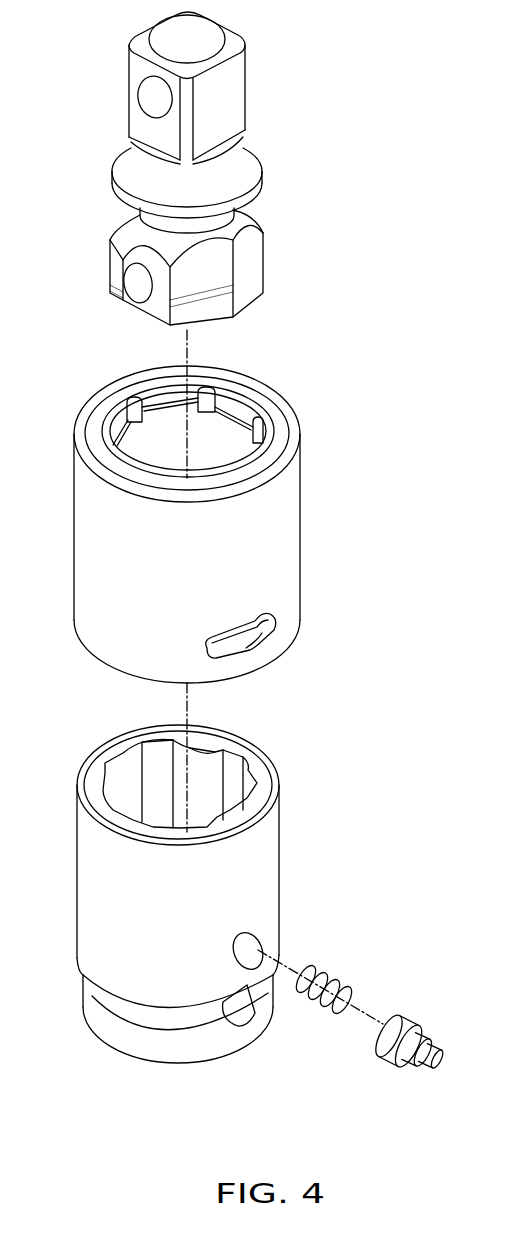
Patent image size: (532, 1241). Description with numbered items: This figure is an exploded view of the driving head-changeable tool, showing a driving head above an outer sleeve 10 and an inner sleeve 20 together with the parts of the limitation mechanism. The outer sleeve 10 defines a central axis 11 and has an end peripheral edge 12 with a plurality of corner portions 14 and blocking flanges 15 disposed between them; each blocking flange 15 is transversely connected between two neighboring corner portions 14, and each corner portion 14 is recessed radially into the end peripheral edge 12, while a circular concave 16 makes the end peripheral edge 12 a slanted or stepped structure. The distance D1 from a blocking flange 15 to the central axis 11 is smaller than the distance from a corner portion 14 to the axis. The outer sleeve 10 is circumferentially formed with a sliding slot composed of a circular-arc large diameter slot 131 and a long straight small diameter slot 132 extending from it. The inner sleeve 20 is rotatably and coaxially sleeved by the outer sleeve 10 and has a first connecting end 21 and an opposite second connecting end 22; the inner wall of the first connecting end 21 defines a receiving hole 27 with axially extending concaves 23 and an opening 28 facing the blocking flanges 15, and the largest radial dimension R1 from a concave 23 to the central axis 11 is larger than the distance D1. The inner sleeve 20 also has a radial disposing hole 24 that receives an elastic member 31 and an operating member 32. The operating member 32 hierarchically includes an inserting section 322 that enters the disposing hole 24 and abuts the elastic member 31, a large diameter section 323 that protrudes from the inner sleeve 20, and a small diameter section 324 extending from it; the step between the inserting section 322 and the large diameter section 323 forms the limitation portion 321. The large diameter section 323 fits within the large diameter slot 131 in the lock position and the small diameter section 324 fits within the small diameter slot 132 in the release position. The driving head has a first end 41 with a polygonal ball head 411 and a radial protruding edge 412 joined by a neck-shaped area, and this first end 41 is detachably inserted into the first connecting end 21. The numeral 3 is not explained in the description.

The first end 41 is at (0, 525).
The radial protruding edge 412 is at (250, 165).
The polygonal ball head 411 is at (223, 258).
The outer sleeve 10 is at (283, 510).
The end peripheral edge 12 is at (260, 445).
The circular concave 16 is at (112, 420).
The blocking flanges 15 is at (167, 408).
The corner portions 14 is at (203, 393).
The distance from blocking flange to central axis D1 is at (233, 418).
The large diameter slot 131 is at (263, 628).
The small diameter slot 132 is at (233, 650).
The central axis 11 is at (187, 710).
The inner sleeve 20 is at (255, 873).
The first connecting end 21 is at (262, 783).
The concaves 23 is at (230, 810).
The opening 28 is at (157, 740).
The receiving hole 27 is at (218, 760).
The largest radial dimension of the opening R1 is at (107, 773).
The socket assembly 3 is at (11, 872).
The disposing hole 24 is at (255, 942).
The second connecting end 22 is at (148, 1047).
The elastic member 31 is at (327, 982).
The operating member 32 is at (392, 1048).
The limitation portion 321 is at (403, 1057).
The inserting section 322 is at (395, 1020).
The large diameter section 323 is at (415, 1033).
The small diameter section 324 is at (433, 1053).